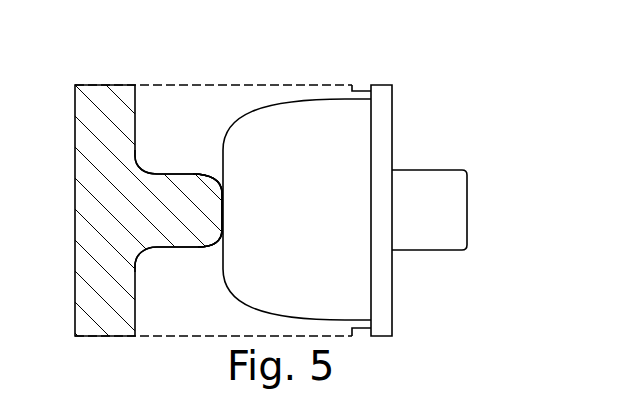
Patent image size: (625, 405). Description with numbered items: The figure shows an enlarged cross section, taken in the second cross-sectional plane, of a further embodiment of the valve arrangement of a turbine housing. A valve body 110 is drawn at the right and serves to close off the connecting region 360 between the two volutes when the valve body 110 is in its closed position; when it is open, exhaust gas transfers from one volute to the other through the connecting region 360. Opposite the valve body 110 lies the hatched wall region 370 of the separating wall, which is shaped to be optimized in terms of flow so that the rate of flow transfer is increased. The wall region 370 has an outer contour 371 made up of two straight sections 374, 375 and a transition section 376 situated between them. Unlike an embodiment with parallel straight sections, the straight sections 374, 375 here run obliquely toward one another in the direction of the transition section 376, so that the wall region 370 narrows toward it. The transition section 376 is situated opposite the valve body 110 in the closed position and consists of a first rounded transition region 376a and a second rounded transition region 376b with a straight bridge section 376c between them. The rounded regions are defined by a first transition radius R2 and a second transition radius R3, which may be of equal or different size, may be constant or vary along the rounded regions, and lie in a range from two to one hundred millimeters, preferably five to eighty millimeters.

The valve body 110 is at (410, 75).
The connecting region 360 is at (211, 185).
The wall region 370 is at (148, 242).
The outer contour 371 is at (147, 171).
The straight section 374 is at (172, 174).
The straight section 375 is at (183, 249).
The transition section 376 is at (238, 242).
The first rounded transition region 376a is at (225, 238).
The second rounded transition region 376b is at (223, 182).
The straight bridge section 376c is at (226, 204).
The first transition radius R2 is at (205, 182).
The second transition radius R3 is at (210, 238).